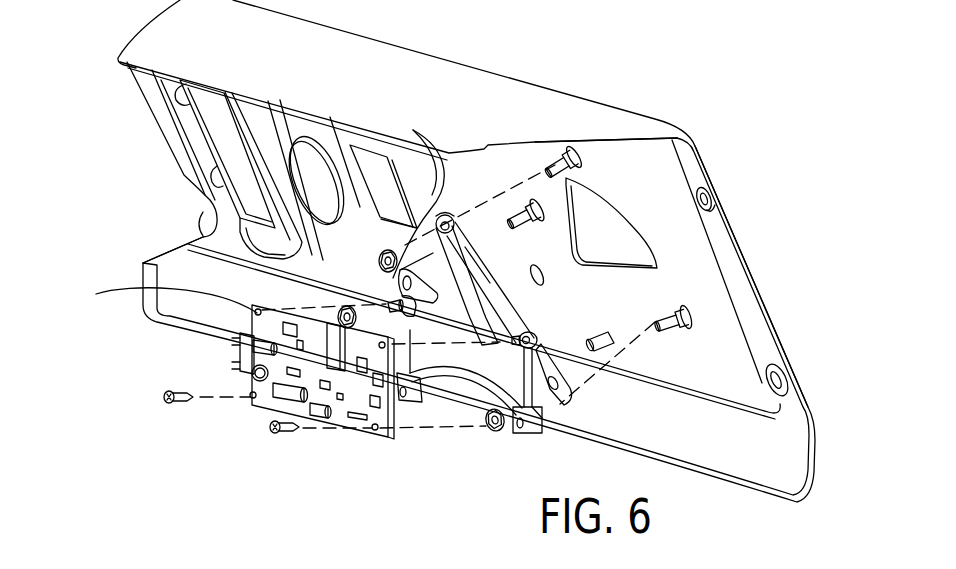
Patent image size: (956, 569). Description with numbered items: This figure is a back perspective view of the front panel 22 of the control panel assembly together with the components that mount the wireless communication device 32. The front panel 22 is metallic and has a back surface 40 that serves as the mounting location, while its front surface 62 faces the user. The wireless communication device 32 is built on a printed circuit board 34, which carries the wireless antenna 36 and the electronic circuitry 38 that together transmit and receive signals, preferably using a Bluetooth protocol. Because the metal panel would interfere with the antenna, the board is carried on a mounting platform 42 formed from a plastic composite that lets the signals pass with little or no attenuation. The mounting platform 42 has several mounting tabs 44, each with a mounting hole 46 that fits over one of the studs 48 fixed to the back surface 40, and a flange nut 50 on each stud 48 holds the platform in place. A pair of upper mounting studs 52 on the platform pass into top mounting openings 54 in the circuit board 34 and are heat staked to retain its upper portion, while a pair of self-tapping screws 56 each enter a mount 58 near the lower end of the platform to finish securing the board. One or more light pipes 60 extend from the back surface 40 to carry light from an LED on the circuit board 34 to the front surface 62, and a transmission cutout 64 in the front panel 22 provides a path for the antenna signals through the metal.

The front panel 22 is at (717, 173).
The wireless communication device 32 is at (220, 358).
The printed circuit board 34 is at (357, 430).
The wireless antenna 36 is at (330, 362).
The electronic circuitry 38 is at (297, 390).
The back surface 40 is at (613, 156).
The mounting platform 42 is at (520, 303).
The mounting tabs 44 is at (390, 252).
The mounting hole 46 is at (557, 402).
The studs 48 is at (558, 160).
The flange nut 50 is at (487, 433).
The upper mounting studs 52 is at (537, 398).
The top mounting openings 54 is at (160, 299).
The self-tapping screws 56 is at (182, 407).
The mount 58 is at (420, 395).
The light pipes 60 is at (610, 337).
The front surface 62 is at (755, 270).
The transmission cutout 64 is at (588, 200).